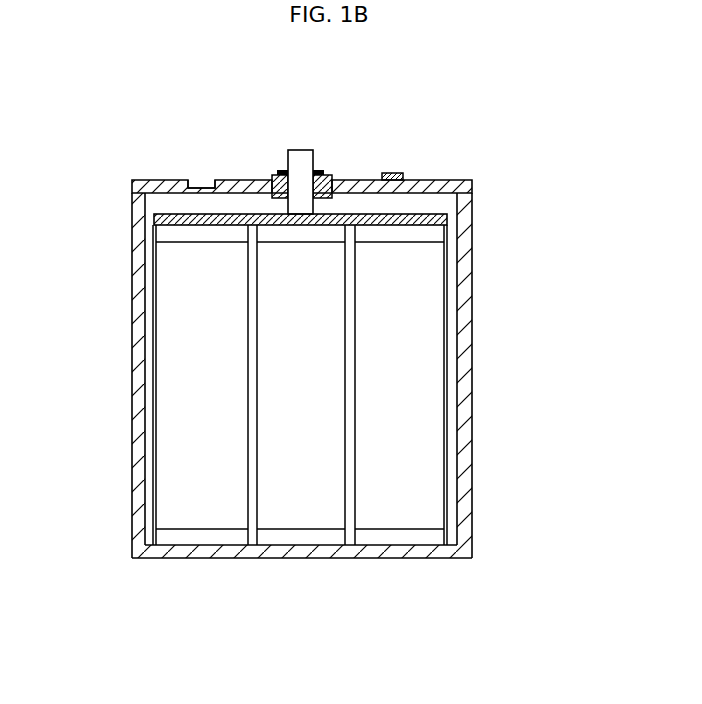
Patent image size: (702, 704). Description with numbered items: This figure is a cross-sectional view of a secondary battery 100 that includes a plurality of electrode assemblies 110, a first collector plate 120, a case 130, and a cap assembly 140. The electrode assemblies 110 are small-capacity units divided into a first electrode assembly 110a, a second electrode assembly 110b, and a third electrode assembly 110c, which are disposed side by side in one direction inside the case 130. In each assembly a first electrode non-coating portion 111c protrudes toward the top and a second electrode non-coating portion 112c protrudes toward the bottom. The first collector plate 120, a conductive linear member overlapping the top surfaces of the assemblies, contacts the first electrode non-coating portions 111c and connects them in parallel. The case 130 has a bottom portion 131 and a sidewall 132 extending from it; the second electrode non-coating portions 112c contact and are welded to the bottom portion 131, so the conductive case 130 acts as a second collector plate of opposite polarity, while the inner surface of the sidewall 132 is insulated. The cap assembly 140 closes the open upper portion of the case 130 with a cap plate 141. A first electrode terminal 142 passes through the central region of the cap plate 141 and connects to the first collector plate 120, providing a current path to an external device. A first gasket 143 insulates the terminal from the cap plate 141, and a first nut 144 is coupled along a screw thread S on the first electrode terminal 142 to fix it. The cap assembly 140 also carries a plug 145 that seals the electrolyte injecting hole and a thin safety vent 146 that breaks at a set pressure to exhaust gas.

The secondary battery 100 is at (72, 102).
The electrode assemblies 110 is at (187, 610).
The first electrode assembly 110a is at (207, 513).
The second electrode assembly 110b is at (298, 513).
The third electrode assembly 110c is at (398, 513).
The first electrode non-coating portion 111c is at (162, 234).
The second electrode non-coating portion 112c is at (160, 540).
The first collector plate 120 is at (448, 216).
The case 130 is at (550, 507).
The bottom portion 131 is at (445, 560).
The sidewall 132 is at (462, 511).
The cap assembly 140 is at (442, 164).
The cap plate 141 is at (160, 180).
The first electrode terminal 142 is at (299, 150).
The first gasket 143 is at (270, 176).
The first nut 144 is at (326, 171).
The plug 145 is at (402, 173).
The safety vent 146 is at (201, 188).
The screw thread S is at (319, 169).